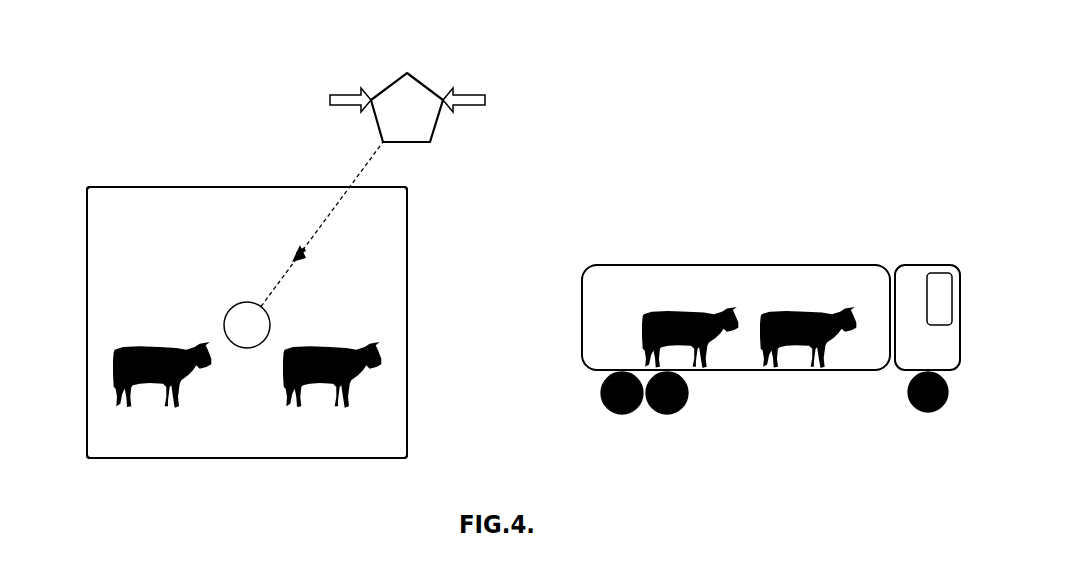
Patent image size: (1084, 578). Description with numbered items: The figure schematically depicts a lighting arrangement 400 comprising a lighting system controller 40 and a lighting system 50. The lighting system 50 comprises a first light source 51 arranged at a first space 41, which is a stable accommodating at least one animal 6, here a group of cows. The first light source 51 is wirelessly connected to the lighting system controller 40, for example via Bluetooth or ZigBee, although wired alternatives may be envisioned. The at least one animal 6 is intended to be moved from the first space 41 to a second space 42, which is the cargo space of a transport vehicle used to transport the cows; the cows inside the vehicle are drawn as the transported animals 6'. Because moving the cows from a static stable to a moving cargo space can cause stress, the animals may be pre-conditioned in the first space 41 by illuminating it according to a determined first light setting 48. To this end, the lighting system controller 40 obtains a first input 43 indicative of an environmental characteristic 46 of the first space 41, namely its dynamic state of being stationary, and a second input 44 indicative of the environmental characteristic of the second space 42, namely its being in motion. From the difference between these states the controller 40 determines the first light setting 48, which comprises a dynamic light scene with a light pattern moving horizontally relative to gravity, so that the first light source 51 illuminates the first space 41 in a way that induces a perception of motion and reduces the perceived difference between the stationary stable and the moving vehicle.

The lighting arrangement 400 is at (153, 91).
The lighting system 50 is at (213, 210).
The environmental characteristic of the first space 46 is at (94, 229).
The first space 41 is at (384, 419).
The lighting system controller 40 is at (367, 127).
The first input 43 is at (332, 91).
The second input 44 is at (470, 106).
The first light source 51 is at (247, 325).
The first light setting 48 is at (304, 255).
The animal 6 is at (247, 358).
The second space 42 is at (866, 356).
The transported animal 6' is at (749, 323).